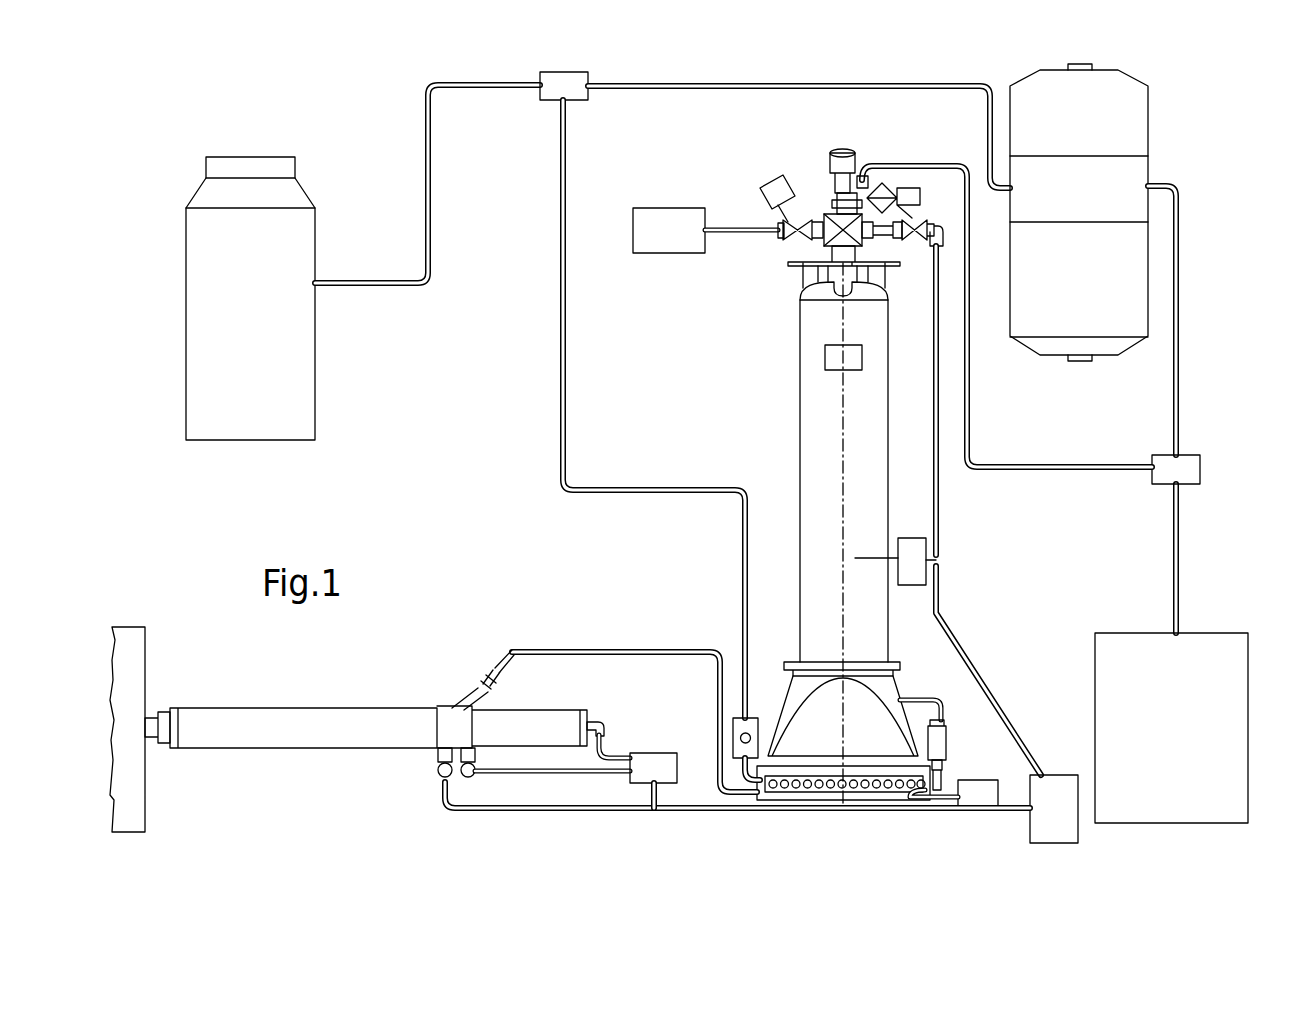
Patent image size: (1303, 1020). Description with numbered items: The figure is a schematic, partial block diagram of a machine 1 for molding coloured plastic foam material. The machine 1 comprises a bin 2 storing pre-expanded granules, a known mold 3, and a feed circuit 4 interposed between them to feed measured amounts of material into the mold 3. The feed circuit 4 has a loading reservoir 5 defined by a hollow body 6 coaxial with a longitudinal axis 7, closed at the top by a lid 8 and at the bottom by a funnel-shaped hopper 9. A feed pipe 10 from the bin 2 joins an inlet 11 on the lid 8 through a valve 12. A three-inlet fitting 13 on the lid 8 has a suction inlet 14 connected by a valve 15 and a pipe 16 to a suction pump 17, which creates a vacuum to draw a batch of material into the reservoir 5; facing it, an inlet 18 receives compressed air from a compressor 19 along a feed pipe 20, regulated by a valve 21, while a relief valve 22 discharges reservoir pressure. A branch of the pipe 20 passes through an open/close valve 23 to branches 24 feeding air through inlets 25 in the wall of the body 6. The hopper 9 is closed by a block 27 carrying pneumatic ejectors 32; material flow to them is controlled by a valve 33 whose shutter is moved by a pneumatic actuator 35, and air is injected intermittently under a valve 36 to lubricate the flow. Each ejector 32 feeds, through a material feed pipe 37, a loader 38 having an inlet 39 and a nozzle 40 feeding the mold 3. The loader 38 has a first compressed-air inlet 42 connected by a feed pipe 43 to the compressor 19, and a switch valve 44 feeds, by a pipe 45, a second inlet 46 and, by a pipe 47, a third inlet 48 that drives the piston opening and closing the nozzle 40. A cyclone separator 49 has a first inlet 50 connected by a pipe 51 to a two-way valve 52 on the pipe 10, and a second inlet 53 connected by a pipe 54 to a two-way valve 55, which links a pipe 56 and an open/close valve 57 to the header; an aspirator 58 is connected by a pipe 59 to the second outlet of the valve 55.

The machine 1 is at (348, 135).
The bin 2 is at (1185, 665).
The mold 3 is at (128, 650).
The feed circuit 4 is at (725, 80).
The loading reservoir 5 is at (795, 375).
The hollow body 6 is at (812, 405).
The longitudinal axis 7 is at (838, 408).
The lid 8 is at (815, 290).
The hopper 9 is at (790, 710).
The feed pipe 10 is at (973, 438).
The inlet 11 is at (866, 180).
The valve 12 is at (908, 188).
The three-inlet fitting 13 is at (823, 240).
The suction inlet 14 is at (800, 218).
The valve 15 is at (760, 185).
The pipe 16 is at (735, 235).
The suction pump 17 is at (660, 235).
The inlet 18 is at (885, 235).
The compressor 19 is at (1068, 808).
The feed pipe 20 is at (940, 498).
The valve 21 is at (915, 225).
The relief valve 22 is at (832, 165).
The open/close valve 23 is at (912, 552).
The branches 24 is at (882, 578).
The inlets 25 is at (862, 562).
The block 27 is at (783, 784).
The ejectors 32 is at (830, 786).
The valve 33 is at (948, 775).
The pneumatic actuator 35 is at (945, 740).
The valve 36 is at (988, 808).
The material feed pipe 37 is at (620, 652).
The loader 38 is at (313, 745).
The inlet 39 is at (488, 665).
The nozzle 40 is at (153, 740).
The first compressed-air inlet 42 is at (438, 775).
The feed pipe 43 is at (688, 810).
The switch valve 44 is at (650, 768).
The pipe 45 is at (558, 775).
The second compressed-air inlet 46 is at (474, 776).
The pipe 47 is at (605, 750).
The third compressed-air inlet 48 is at (598, 722).
The cyclone separator 49 is at (1130, 145).
The first inlet 50 is at (1155, 185).
The pipe 51 is at (1180, 345).
The two-way valve 52 is at (1183, 468).
The second inlet 53 is at (1004, 193).
The pipe 54 is at (795, 95).
The two-way valve 55 is at (580, 100).
The pipe 56 is at (567, 345).
The open/close valve 57 is at (738, 718).
The aspirator 58 is at (292, 400).
The pipe 59 is at (426, 200).